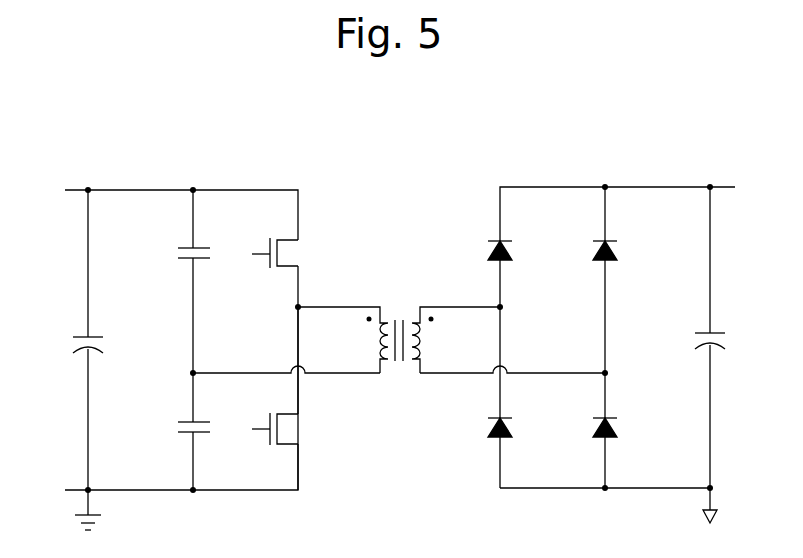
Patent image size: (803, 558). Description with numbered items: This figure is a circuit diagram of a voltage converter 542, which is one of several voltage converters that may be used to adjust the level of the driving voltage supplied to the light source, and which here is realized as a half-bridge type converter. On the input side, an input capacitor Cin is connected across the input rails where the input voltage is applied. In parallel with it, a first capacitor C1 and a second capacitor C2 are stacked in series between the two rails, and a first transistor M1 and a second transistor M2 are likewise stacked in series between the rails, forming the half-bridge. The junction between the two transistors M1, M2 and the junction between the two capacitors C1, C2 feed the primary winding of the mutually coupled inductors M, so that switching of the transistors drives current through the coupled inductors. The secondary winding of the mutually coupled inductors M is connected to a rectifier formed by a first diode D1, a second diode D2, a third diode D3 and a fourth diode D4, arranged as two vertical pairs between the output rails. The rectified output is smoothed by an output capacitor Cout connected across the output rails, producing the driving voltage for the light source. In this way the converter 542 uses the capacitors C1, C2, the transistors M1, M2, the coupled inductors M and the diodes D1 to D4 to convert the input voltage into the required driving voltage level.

The voltage converter 542 is at (400, 304).
The input capacitor Cin is at (68, 340).
The first capacitor C1 is at (180, 253).
The second capacitor C2 is at (180, 428).
The first transistor M1 is at (288, 253).
The second transistor M2 is at (288, 429).
The mutually coupled inductors M is at (399, 329).
The first diode D1 is at (514, 252).
The second diode D2 is at (514, 428).
The third diode D3 is at (619, 252).
The fourth diode D4 is at (619, 428).
The output capacitor Cout is at (731, 337).